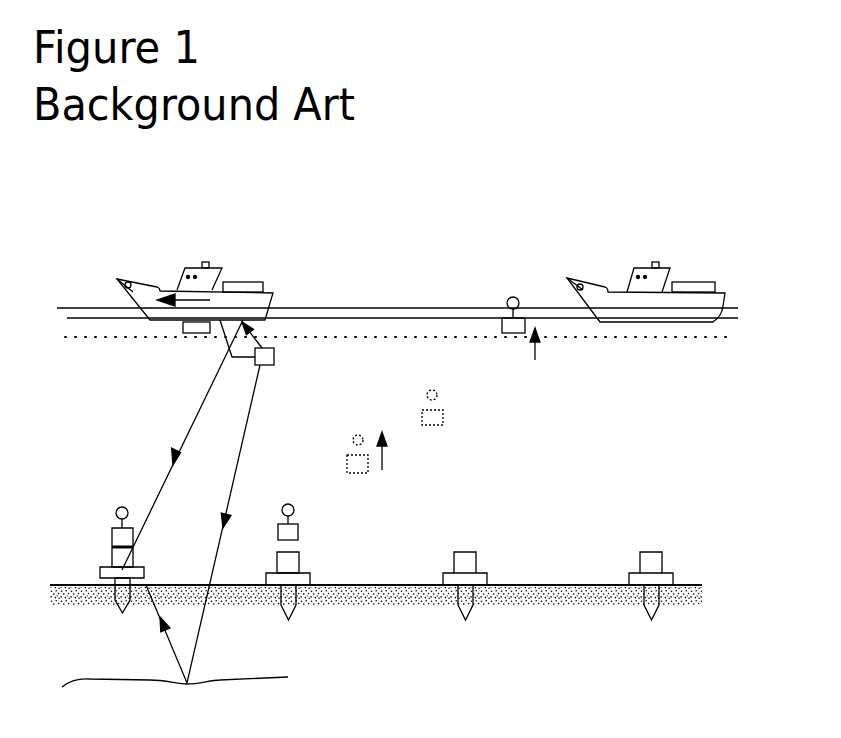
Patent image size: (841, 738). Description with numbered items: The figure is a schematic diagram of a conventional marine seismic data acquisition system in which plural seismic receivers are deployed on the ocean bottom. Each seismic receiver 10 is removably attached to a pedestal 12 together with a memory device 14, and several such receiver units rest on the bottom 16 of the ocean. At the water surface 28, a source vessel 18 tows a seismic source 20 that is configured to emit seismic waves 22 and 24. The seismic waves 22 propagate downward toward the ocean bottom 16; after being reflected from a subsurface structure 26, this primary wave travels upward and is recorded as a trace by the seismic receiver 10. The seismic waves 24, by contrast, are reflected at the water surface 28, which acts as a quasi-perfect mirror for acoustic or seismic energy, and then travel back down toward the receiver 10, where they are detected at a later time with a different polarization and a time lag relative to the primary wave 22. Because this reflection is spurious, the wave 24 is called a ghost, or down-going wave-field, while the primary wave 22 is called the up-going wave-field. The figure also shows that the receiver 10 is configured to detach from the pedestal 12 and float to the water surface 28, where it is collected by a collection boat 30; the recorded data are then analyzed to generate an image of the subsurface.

The seismic receiver 10 is at (510, 335).
The pedestal 12 is at (300, 568).
The memory device 14 is at (294, 510).
The ocean bottom 16 is at (686, 585).
The source vessel 18 is at (126, 265).
The seismic source 20 is at (275, 355).
The seismic waves (primary) 22 is at (245, 432).
The seismic waves (ghost) 24 is at (263, 345).
The structure 26 is at (260, 678).
The water surface 28 is at (405, 308).
The collection boat 30 is at (581, 243).